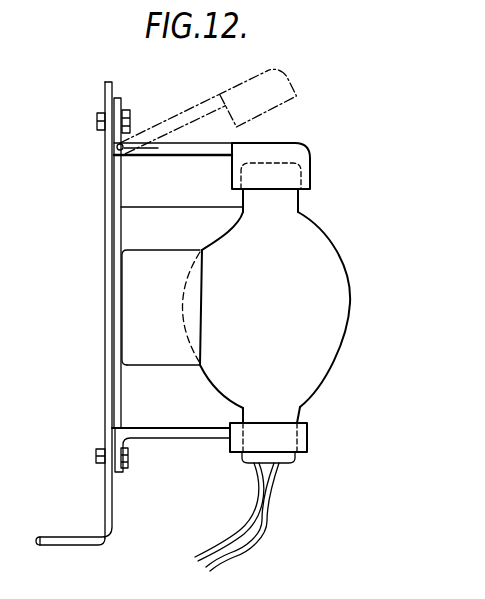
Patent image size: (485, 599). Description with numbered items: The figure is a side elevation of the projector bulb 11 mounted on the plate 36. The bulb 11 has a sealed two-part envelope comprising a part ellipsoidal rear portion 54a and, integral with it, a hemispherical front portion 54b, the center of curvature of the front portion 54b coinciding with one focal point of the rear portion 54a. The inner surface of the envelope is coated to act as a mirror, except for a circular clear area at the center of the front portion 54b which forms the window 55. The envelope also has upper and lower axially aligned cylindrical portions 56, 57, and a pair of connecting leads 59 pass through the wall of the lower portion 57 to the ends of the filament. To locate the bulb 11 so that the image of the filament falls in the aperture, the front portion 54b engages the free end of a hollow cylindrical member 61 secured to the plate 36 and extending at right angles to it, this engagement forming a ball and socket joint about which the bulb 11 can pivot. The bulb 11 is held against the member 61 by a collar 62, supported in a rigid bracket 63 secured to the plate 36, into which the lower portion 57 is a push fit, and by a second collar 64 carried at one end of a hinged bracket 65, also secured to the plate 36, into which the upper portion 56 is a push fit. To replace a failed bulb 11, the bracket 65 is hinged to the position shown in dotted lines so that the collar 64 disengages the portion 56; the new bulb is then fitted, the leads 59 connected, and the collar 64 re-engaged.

The bulb 11 is at (289, 323).
The plate 36 is at (107, 487).
The part ellipsoidal rear portion 54a is at (425, 334).
The hemispherical front portion 54b is at (226, 220).
The window 55 is at (182, 303).
The upper cylindrical portion 56 is at (303, 205).
The lower cylindrical portion 57 is at (250, 415).
The connecting leads 59 is at (263, 537).
The hollow cylindrical member 61 is at (197, 367).
The collar 62 is at (282, 438).
The rigid bracket 63 is at (145, 439).
The second collar 64 is at (296, 154).
The bracket 65 is at (118, 148).